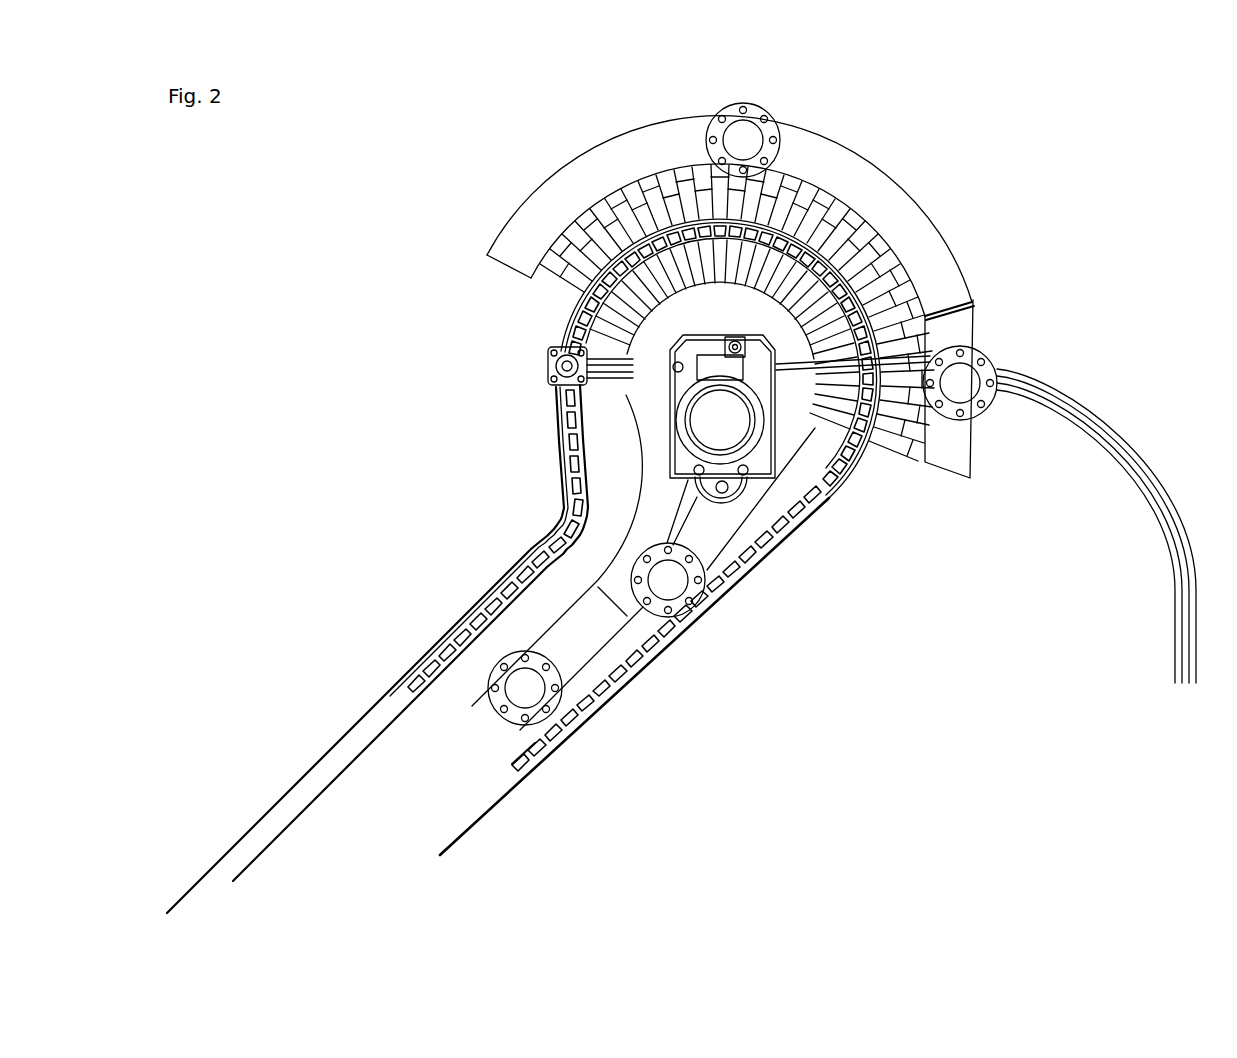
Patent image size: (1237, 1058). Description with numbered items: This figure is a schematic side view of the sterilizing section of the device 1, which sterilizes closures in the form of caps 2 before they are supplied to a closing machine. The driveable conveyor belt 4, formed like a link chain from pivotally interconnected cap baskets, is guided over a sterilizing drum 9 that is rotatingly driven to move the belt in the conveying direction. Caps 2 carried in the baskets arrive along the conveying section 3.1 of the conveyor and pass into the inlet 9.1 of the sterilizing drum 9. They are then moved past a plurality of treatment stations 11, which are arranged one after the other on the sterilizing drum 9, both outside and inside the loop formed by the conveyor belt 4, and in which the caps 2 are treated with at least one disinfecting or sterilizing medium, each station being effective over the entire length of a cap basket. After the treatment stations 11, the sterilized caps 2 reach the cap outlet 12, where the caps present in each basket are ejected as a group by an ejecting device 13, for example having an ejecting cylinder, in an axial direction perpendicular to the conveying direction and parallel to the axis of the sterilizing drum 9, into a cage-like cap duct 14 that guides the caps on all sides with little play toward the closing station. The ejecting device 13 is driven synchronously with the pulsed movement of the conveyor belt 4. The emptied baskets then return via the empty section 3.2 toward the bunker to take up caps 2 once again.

The device 1 is at (1058, 275).
The caps 2 is at (676, 623).
The conveying section 3.1 is at (599, 739).
The empty section 3.2 is at (470, 573).
The conveyor belt 4 is at (748, 585).
The sterilizing drum 9 is at (808, 462).
The inlet 9.1 is at (782, 578).
The treatment stations 11 is at (878, 242).
The cap outlet 12 is at (521, 326).
The ejecting device 13 is at (547, 358).
The cap duct 14 is at (1113, 440).